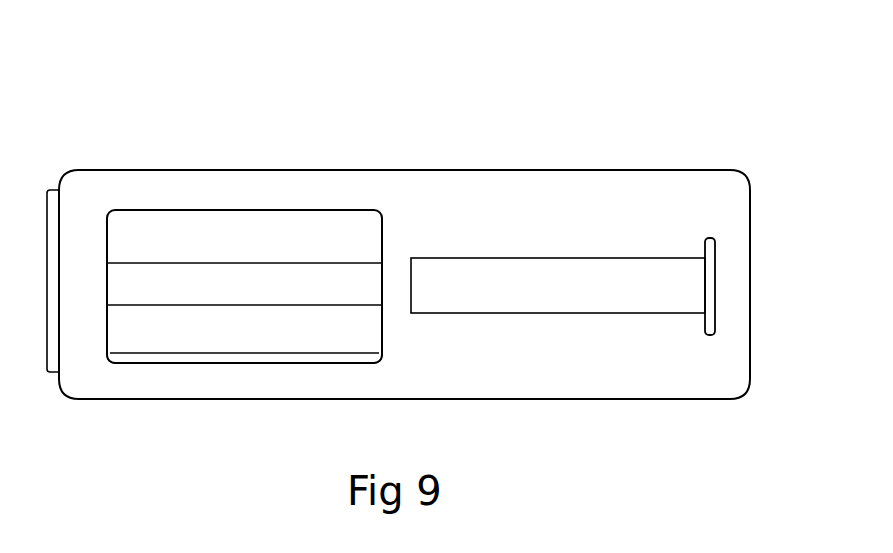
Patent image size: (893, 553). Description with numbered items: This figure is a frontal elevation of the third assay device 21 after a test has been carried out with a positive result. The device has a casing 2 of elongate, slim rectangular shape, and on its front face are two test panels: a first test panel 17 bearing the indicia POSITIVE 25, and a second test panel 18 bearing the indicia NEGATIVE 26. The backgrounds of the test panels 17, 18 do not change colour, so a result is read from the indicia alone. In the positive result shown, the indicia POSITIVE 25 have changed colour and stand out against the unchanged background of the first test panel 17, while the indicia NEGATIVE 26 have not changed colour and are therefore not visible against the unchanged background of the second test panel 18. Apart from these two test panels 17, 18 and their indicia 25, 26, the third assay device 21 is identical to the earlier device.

The casing 2 is at (582, 383).
The first test panel 17 is at (130, 228).
The second test panel 18 is at (150, 338).
The third assay device 21 is at (628, 147).
The indicia POSITIVE 25 is at (283, 222).
The indicia NEGATIVE 26 is at (245, 352).